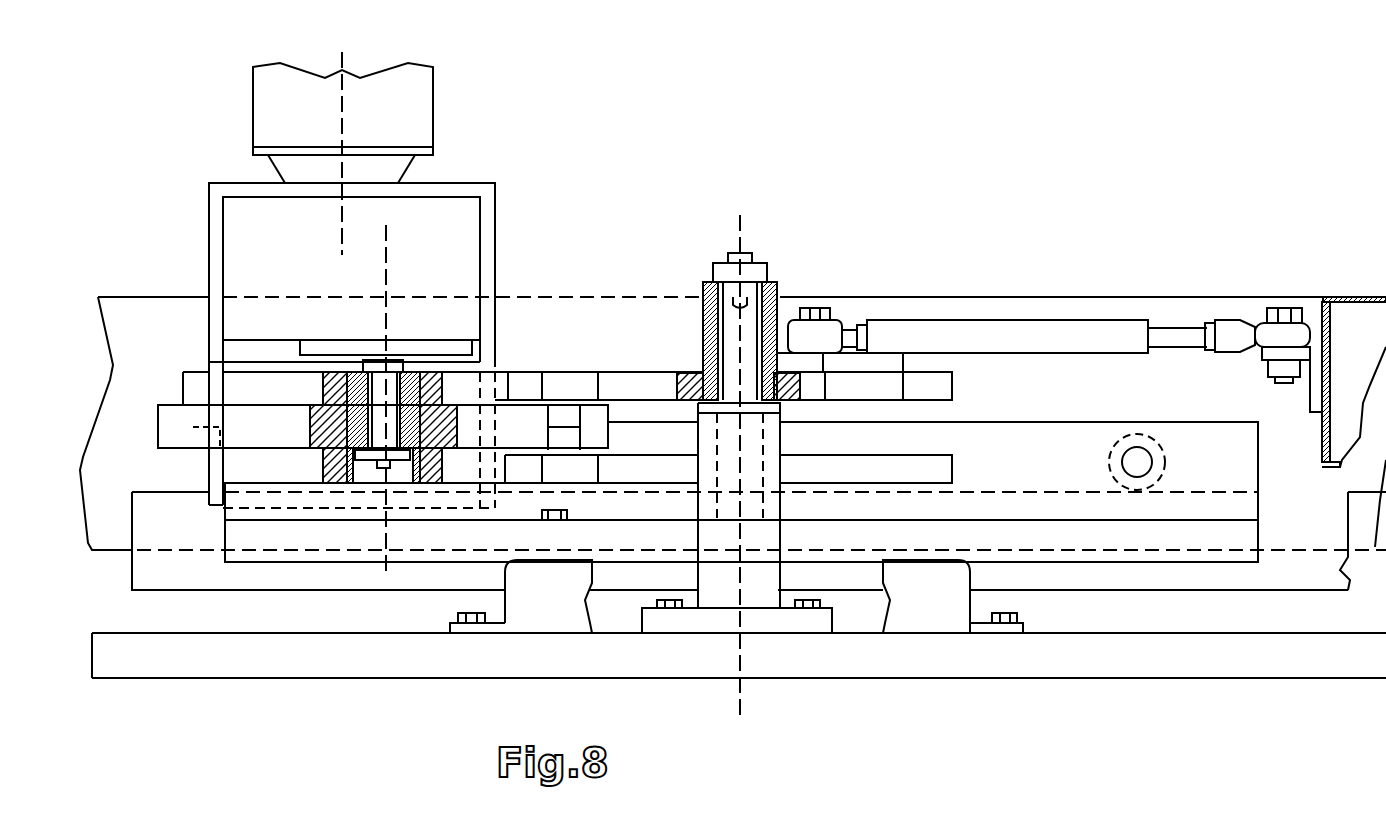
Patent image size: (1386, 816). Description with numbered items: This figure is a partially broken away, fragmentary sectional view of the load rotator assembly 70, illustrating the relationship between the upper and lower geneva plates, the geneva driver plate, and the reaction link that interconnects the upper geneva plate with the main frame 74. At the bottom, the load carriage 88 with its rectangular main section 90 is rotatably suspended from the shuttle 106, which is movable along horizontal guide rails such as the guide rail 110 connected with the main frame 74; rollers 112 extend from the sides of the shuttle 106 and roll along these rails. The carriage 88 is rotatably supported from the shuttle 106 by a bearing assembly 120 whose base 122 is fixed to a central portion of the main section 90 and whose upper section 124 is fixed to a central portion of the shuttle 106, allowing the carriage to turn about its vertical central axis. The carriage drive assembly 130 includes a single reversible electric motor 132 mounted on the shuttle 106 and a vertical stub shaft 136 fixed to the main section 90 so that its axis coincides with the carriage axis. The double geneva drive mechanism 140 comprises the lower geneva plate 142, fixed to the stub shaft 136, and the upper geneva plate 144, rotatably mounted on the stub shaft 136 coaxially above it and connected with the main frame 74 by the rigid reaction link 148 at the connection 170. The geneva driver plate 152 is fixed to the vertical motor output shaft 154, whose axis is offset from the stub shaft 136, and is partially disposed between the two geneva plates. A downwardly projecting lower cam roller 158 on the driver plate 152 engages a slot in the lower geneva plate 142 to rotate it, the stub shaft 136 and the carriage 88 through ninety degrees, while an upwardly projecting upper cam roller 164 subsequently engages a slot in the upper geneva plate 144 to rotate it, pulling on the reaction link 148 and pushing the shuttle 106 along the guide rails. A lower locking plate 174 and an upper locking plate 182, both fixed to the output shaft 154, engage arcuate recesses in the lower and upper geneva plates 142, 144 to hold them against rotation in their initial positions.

The load rotator assembly 70 is at (142, 152).
The main frame 74 is at (1360, 297).
The load carriage 88 is at (207, 683).
The main section 90 is at (172, 650).
The shuttle 106 is at (1212, 515).
The guide rail 110 is at (1285, 570).
The rollers 112 is at (1140, 437).
The bearing assembly 120 is at (514, 610).
The base 122 is at (920, 630).
The upper section 124 is at (950, 575).
The carriage drive assembly 130 is at (746, 158).
The reversible electric motor 132 is at (400, 112).
The stub shaft 136 is at (735, 342).
The double geneva drive mechanism 140 is at (574, 358).
The lower geneva plate 142 is at (963, 461).
The upper geneva plate 144 is at (963, 386).
The reaction link 148 is at (1037, 333).
The geneva driver plate 152 is at (152, 424).
The motor output shaft 154 is at (385, 395).
The lower cam roller 158 is at (575, 468).
The upper cam roller 164 is at (192, 385).
The reaction link connection 170 is at (820, 300).
The lower locking plate 174 is at (275, 465).
The upper locking plate 182 is at (267, 383).